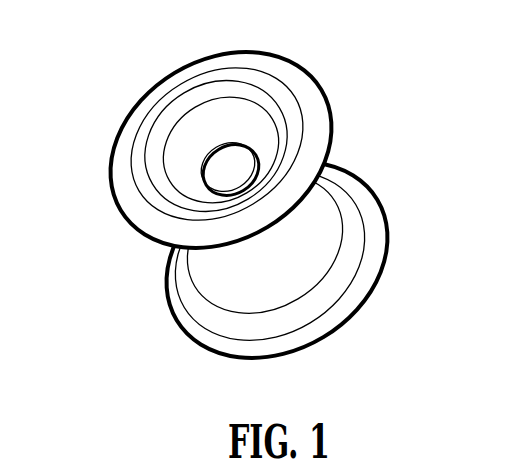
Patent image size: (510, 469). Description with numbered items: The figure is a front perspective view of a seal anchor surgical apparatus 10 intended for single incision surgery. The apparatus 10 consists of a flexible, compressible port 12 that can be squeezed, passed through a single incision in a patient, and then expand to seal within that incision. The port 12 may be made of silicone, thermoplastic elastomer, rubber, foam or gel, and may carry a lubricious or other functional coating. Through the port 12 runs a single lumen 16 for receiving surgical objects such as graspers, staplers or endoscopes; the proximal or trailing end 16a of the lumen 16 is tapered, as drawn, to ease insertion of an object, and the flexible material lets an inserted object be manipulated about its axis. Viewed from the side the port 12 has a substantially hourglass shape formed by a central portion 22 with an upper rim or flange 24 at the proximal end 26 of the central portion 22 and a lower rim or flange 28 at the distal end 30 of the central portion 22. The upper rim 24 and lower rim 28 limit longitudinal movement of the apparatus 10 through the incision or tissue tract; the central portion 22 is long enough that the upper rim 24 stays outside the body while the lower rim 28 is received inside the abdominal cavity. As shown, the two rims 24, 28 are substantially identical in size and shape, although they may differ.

The surgical apparatus 10 is at (249, 202).
The port 12 is at (284, 255).
The lumen 16 is at (229, 163).
The proximal end of lumen 16a is at (252, 92).
The central portion 22 is at (178, 266).
The upper rim 24 is at (297, 78).
The proximal end 26 is at (340, 105).
The lower rim 28 is at (365, 282).
The distal end 30 is at (372, 313).